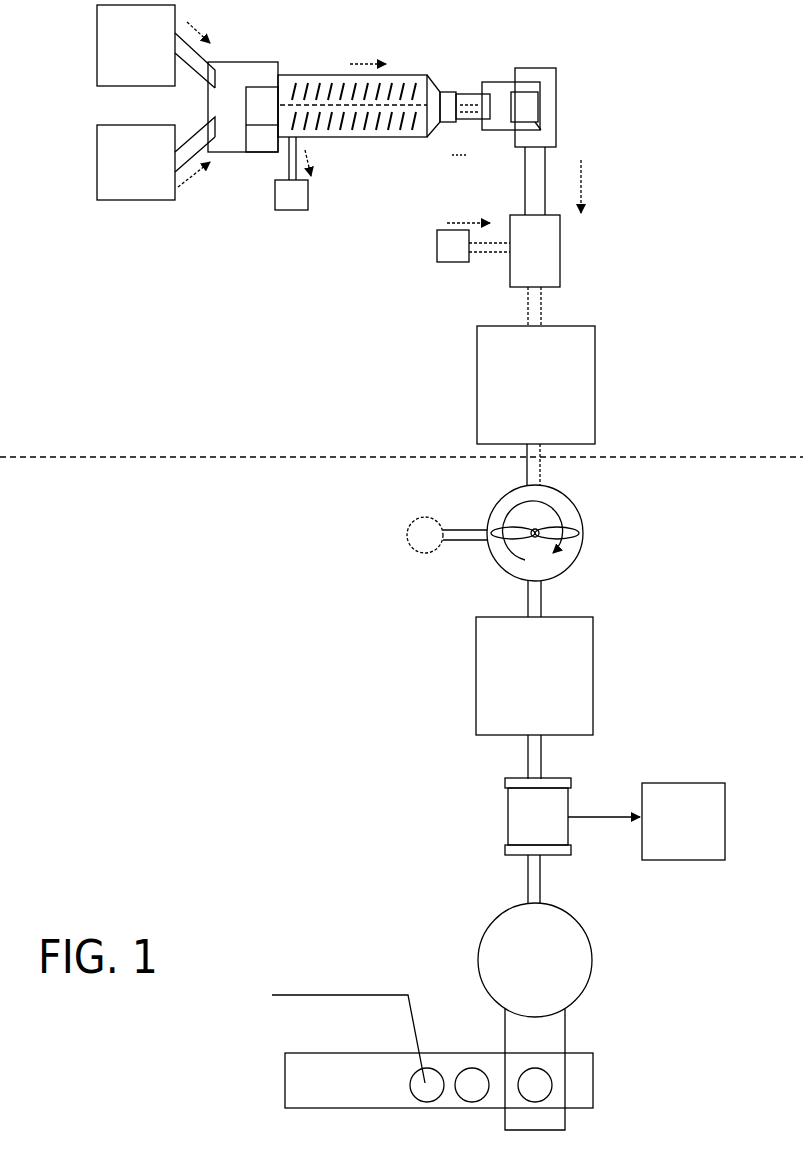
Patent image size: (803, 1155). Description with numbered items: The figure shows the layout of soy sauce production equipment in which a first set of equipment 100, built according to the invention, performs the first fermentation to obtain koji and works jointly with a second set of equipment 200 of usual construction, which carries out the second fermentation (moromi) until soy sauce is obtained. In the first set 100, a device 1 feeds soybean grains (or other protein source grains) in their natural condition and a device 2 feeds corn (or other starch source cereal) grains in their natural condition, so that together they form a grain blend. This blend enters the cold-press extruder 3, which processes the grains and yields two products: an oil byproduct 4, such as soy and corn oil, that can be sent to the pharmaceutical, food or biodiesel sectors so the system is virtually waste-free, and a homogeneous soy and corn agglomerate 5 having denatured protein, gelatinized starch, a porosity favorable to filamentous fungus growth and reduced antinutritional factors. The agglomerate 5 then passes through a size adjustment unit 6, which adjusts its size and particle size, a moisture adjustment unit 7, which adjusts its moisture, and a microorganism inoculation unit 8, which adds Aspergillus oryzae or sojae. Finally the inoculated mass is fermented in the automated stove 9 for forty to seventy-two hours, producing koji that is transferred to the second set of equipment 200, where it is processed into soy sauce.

The device for soybean grain feed 1 is at (156, 46).
The device for corn grain feed 2 is at (156, 158).
The cold-press extruder 3 is at (343, 86).
The oil byproduct 4 is at (276, 212).
The homogeneous soy and corn agglomerate 5 is at (471, 92).
The size adjustment unit 6 is at (574, 157).
The moisture adjustment unit 7 is at (535, 270).
The microorganism inoculation unit 8 is at (437, 248).
The automated stove 9 is at (536, 405).
The first set of equipment 100 is at (205, 450).
The second set of equipment 200 is at (205, 493).